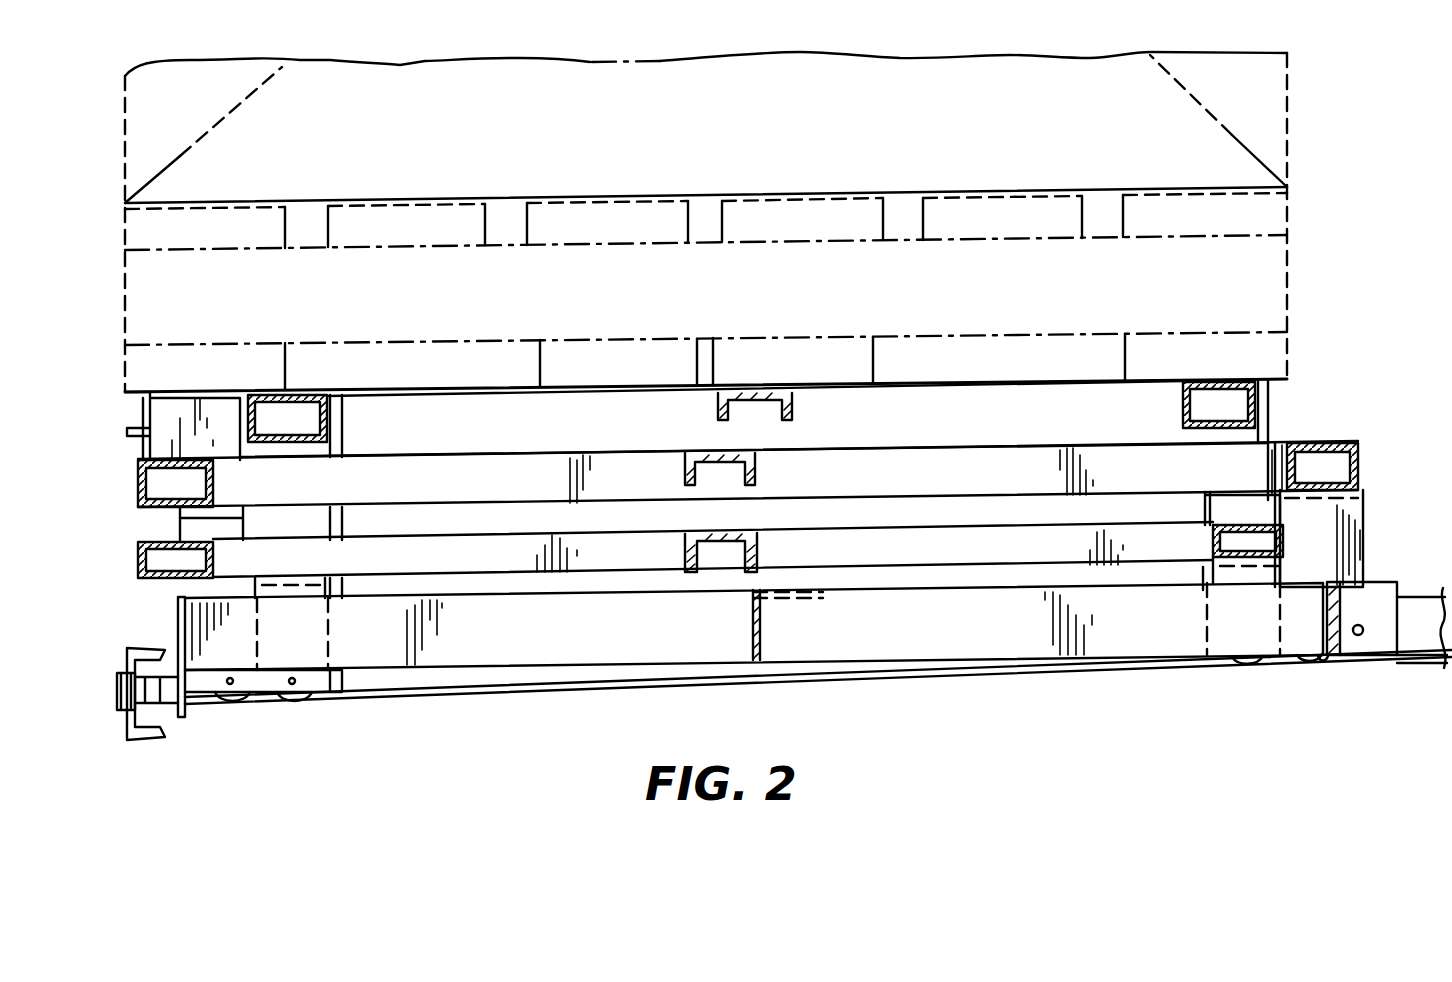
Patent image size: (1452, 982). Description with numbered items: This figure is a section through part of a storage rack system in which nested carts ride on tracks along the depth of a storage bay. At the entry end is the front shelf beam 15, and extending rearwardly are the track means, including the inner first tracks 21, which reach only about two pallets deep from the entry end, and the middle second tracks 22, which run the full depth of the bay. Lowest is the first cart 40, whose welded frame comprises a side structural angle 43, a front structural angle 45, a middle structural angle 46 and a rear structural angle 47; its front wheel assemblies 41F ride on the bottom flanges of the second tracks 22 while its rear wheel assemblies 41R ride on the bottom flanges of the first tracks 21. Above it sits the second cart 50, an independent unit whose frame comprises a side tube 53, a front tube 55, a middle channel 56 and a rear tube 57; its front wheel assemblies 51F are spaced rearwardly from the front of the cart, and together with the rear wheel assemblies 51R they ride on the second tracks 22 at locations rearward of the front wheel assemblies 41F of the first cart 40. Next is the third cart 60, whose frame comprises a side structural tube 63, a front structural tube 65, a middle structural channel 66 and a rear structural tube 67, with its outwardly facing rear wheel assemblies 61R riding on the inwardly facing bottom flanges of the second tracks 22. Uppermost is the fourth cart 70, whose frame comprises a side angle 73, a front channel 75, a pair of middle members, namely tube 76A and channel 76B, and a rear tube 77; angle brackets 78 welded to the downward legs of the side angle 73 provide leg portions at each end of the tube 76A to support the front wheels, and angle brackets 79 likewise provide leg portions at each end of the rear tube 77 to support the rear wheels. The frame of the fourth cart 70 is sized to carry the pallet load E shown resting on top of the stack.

The pallet load E is at (1297, 125).
The front shelf beam 15 is at (145, 742).
The first tracks 21 is at (1440, 665).
The second tracks 22 is at (1108, 668).
The first cart 40 is at (610, 643).
The front wheel assemblies 41F is at (240, 700).
The rear wheel assemblies 41R is at (1322, 660).
The side structural angle 43 is at (503, 655).
The front structural angle 45 is at (200, 648).
The middle structural angle 46 is at (762, 614).
The rear structural angle 47 is at (1387, 598).
The second cart 50 is at (1003, 543).
The front wheel assemblies 51F is at (300, 700).
The rear wheel assemblies 51R is at (1258, 662).
The side tube 53 is at (502, 542).
The front tube 55 is at (213, 553).
The middle channel 56 is at (685, 546).
The rear tube 57 is at (1213, 540).
The third cart 60 is at (950, 492).
The rear wheel assemblies 61R is at (1312, 662).
The side structural tube 63 is at (562, 430).
The front structural tube 65 is at (213, 476).
The middle structural channel 66 is at (688, 470).
The rear structural tube 67 is at (1358, 456).
The fourth cart 70 is at (963, 388).
The side angle 73 is at (1030, 393).
The front channel 75 is at (158, 393).
The tube 76A is at (330, 412).
The channel 76B is at (718, 405).
The rear tube 77 is at (1183, 409).
The angle brackets 78 is at (330, 445).
The angle brackets 79 is at (1222, 435).